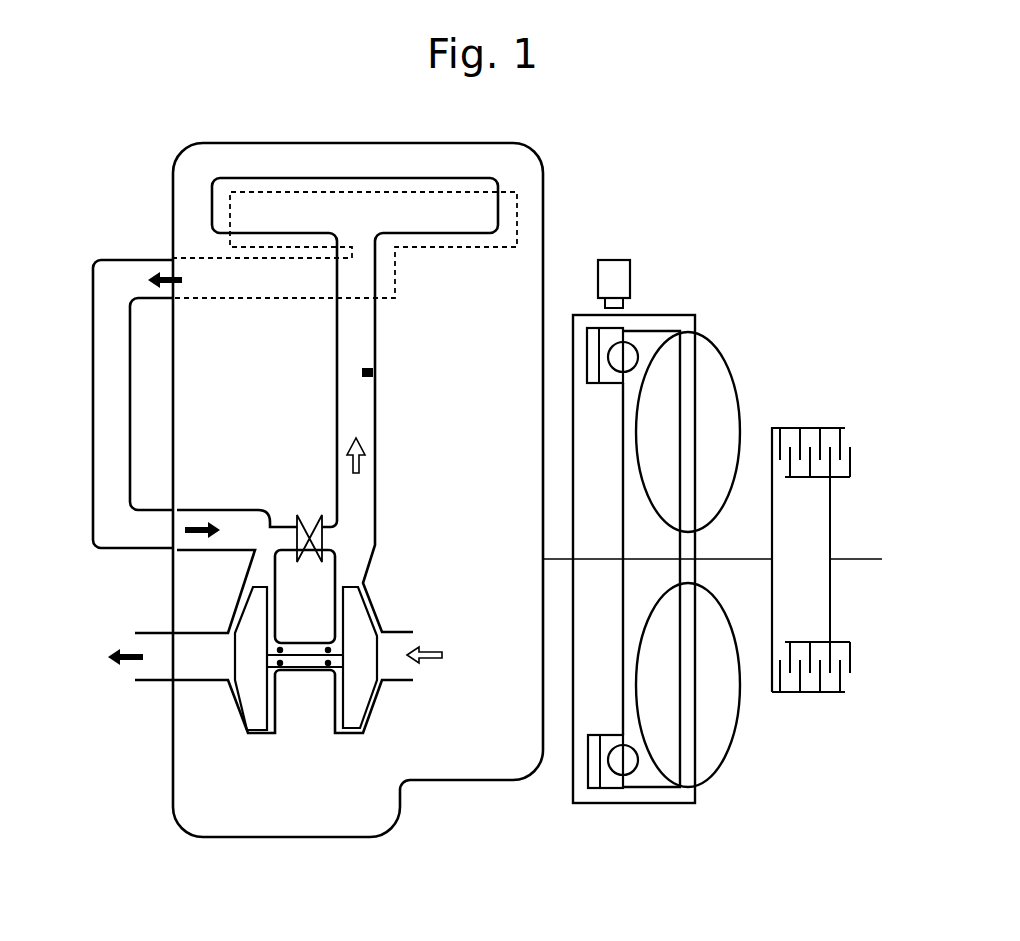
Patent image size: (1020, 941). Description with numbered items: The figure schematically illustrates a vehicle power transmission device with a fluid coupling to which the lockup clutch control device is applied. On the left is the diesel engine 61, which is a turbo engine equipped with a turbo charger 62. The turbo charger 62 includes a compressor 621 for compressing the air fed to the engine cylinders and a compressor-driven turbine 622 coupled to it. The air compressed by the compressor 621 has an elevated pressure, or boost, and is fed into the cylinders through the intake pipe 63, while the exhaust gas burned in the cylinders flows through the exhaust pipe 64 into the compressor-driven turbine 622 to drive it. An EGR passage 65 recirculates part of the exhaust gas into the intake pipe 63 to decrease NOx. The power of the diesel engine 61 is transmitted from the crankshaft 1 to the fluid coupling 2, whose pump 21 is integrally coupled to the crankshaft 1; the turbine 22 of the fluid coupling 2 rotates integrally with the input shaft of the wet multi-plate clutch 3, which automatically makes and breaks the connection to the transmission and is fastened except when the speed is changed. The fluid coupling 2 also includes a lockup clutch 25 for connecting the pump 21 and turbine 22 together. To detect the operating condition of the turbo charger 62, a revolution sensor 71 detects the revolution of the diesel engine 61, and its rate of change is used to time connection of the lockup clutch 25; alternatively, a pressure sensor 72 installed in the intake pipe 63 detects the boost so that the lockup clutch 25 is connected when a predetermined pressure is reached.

The crankshaft 1 is at (557, 561).
The fluid coupling 2 is at (623, 563).
The wet multi-plate clutch 3 is at (814, 429).
The pump 21 is at (722, 380).
The turbine 22 is at (663, 377).
The lockup clutch 25 is at (585, 353).
The diesel engine 61 is at (255, 836).
The turbo charger 62 is at (284, 664).
The intake pipe 63 is at (375, 443).
The exhaust pipe 64 is at (93, 376).
The EGR passage 65 is at (290, 522).
The revolution sensor 71 is at (613, 260).
The pressure sensor 72 is at (373, 368).
The compressor 621 is at (360, 700).
The compressor-driven turbine 622 is at (243, 710).